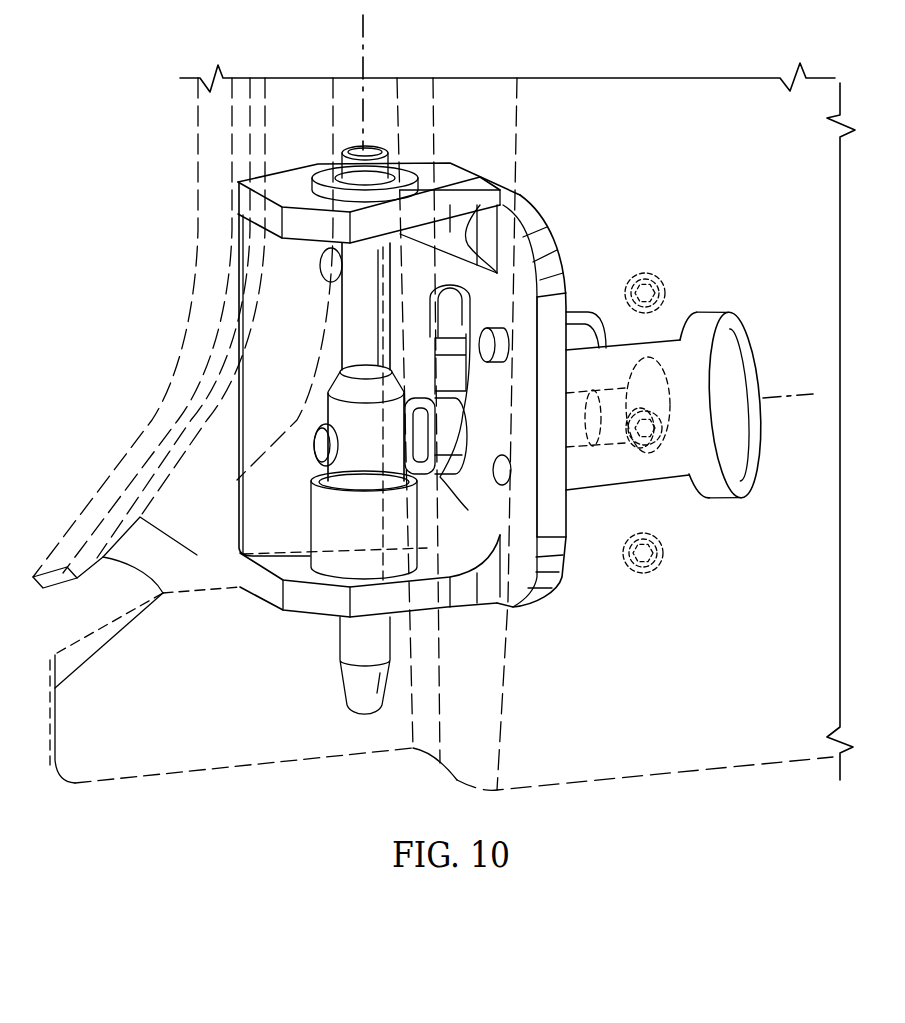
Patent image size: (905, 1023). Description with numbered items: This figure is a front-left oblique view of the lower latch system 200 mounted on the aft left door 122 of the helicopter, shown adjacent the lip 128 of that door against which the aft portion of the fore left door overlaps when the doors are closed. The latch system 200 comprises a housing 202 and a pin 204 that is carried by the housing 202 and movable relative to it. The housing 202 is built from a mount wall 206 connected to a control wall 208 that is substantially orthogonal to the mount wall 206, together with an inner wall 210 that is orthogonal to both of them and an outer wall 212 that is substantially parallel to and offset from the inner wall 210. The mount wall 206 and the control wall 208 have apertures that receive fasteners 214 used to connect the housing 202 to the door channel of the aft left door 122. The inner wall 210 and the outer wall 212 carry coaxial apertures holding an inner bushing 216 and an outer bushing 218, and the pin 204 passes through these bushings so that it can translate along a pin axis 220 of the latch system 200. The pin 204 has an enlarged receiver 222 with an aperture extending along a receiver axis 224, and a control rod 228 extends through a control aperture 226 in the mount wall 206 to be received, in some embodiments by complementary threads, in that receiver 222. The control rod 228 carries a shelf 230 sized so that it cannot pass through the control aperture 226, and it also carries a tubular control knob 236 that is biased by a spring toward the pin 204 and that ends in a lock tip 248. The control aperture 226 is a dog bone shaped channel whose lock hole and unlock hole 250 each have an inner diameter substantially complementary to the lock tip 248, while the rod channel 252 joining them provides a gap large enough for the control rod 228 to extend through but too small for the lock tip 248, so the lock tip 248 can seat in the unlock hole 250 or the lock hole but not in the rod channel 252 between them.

The aft left door 122 is at (658, 768).
The lip 128 is at (190, 766).
The latch system 200 is at (545, 190).
The housing 202 is at (296, 178).
The pin 204 is at (366, 148).
The mount wall 206 is at (213, 441).
The control wall 208 is at (522, 272).
The inner wall 210 is at (497, 190).
The outer wall 212 is at (298, 614).
The fasteners 214 is at (325, 253).
The inner bushing 216 is at (433, 181).
The outer bushing 218 is at (310, 508).
The pin axis 220 is at (359, 33).
The receiver 222 is at (330, 403).
The receiver axis 224 is at (805, 398).
The control aperture 226 is at (437, 343).
The control rod 228 is at (313, 437).
The shelf 230 is at (445, 445).
The control knob 236 is at (708, 317).
The lock tip 248 is at (418, 502).
The unlock hole 250 is at (432, 290).
The rod channel 252 is at (455, 368).